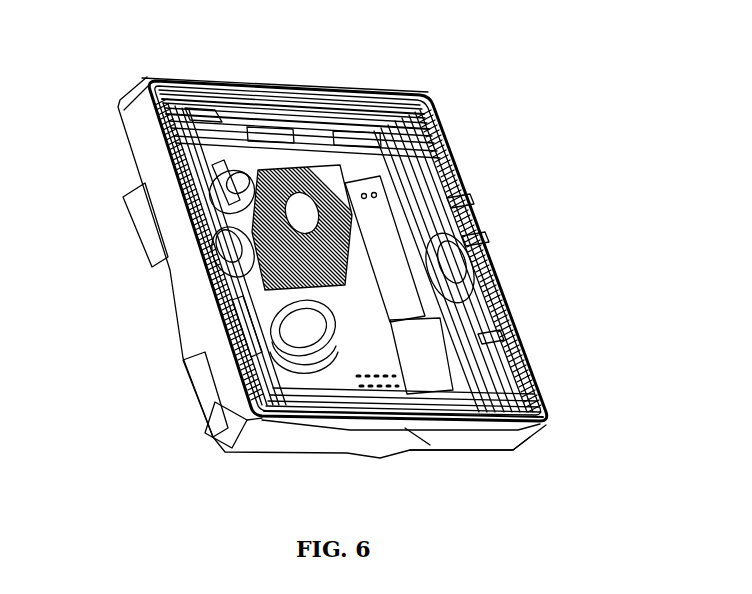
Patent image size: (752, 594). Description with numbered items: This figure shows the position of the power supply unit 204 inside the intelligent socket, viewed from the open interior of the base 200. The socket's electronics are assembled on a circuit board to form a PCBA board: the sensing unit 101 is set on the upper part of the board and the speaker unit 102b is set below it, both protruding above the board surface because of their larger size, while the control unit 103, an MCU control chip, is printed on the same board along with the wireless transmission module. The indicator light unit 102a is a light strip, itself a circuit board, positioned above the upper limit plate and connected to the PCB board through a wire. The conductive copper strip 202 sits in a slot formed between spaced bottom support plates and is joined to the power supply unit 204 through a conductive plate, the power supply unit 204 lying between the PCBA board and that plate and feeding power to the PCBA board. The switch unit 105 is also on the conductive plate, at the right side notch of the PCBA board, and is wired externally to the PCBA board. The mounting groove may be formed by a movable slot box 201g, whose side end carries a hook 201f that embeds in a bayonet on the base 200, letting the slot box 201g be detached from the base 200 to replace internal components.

The base 200 is at (465, 216).
The sensing unit 101 is at (140, 175).
The indicator light unit 102a is at (320, 84).
The speaker unit 102b is at (212, 313).
The switch unit 105 is at (492, 378).
The conductive copper strip 202 is at (333, 333).
The power supply unit 204 is at (350, 436).
The control unit 103 is at (270, 433).
The slot box 201g is at (200, 408).
The hook 201f is at (427, 430).